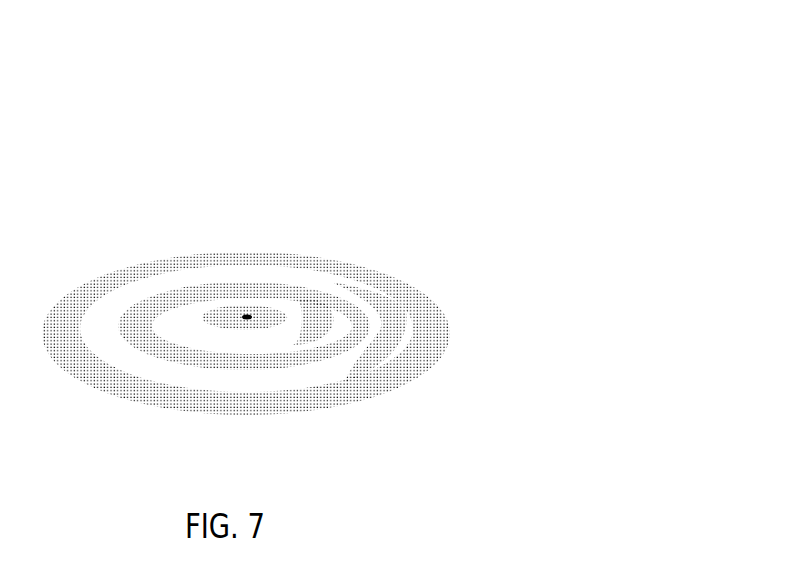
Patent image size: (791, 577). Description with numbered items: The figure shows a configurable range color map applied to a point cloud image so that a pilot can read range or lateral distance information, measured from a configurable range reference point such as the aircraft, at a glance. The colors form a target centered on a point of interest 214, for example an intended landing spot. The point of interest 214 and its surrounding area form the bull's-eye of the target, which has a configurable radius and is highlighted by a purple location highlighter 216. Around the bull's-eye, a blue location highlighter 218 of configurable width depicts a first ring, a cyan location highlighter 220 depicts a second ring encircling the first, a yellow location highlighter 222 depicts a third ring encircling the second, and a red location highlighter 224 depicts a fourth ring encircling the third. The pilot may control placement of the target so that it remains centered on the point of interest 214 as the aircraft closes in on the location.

The point of interest 214 is at (471, 160).
The purple location highlighter 216 is at (458, 199).
The blue location highlighter 218 is at (503, 252).
The cyan location highlighter 220 is at (418, 312).
The yellow location highlighter 222 is at (527, 351).
The red location highlighter 224 is at (379, 383).